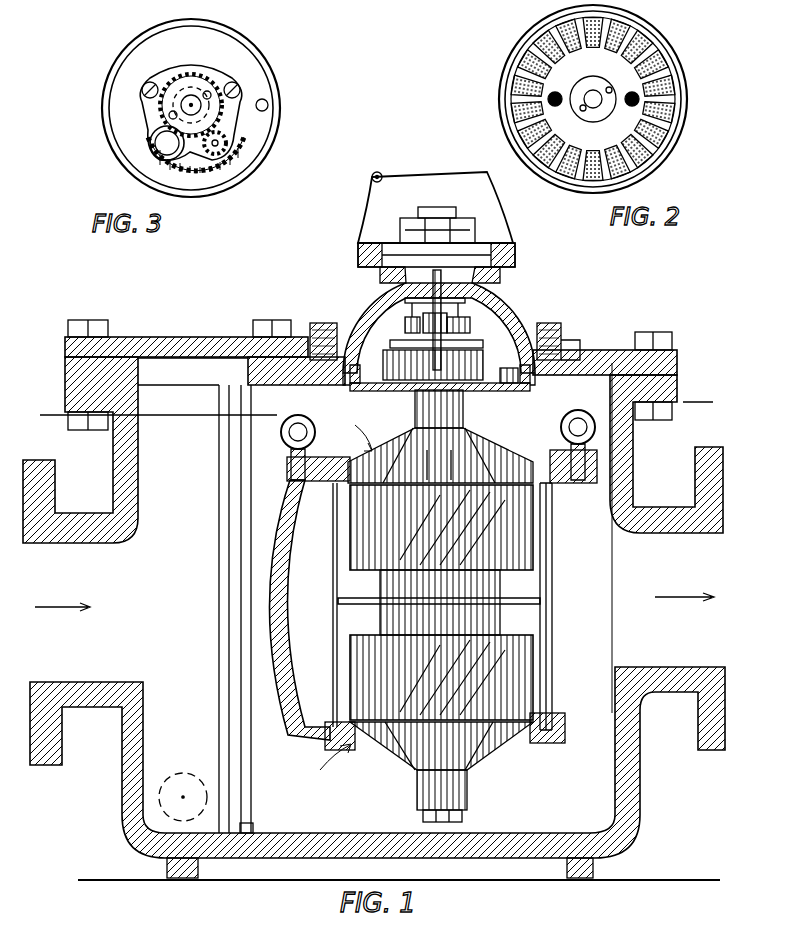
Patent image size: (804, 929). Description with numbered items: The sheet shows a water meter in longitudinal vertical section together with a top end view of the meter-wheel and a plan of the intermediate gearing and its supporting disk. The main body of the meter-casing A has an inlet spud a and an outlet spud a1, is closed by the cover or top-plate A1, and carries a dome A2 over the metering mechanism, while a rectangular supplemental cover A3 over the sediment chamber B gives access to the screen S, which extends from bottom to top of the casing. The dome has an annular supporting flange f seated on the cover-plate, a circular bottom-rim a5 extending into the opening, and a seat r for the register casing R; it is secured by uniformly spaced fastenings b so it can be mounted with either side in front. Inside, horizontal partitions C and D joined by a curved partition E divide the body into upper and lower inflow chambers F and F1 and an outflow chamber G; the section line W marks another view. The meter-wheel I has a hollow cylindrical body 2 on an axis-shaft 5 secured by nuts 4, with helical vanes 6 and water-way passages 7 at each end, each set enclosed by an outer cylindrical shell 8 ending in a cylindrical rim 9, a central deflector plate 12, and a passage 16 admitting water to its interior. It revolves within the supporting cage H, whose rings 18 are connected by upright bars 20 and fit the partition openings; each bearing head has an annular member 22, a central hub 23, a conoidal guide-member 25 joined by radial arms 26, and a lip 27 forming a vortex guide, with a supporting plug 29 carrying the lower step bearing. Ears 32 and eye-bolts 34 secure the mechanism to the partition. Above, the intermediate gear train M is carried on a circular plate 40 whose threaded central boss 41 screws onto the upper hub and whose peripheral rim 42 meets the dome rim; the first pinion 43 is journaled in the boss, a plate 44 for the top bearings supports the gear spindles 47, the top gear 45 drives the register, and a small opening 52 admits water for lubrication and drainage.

In FIG. 1, the main body of the meter-casing A is at (627, 775).
In FIG. 1, the cover or top-plate A1 is at (610, 350).
In FIG. 1, the dome A2 is at (517, 305).
In FIG. 1, the rectangular supplemental cover A3 is at (182, 337).
In FIG. 1, the sediment chamber B is at (183, 753).
In FIG. 1, the upper horizontal partition C is at (598, 472).
In FIG. 1, the lower horizontal partition D is at (590, 723).
In FIG. 1, the curved partition E is at (268, 590).
In FIG. 1, the upper inflow chamber F is at (366, 433).
In FIG. 1, the lower inflow chamber F1 is at (446, 775).
In FIG. 1, the outflow chamber G is at (448, 623).
In FIG. 1, the supporting cage H is at (578, 585).
In FIG. 2, the meter-wheel I is at (589, 58).
In FIG. 1, the meter-wheel I is at (429, 587).
In FIG. 1, the intermediate gear train M is at (449, 320).
In FIG. 1, the register casing R is at (435, 207).
In FIG. 1, the seat r is at (515, 252).
In FIG. 1, the screen S is at (232, 493).
In FIG. 1, the section line W W is at (370, 409).
In FIG. 1, the inlet spud a is at (75, 607).
In FIG. 1, the outlet spud a1 is at (671, 595).
In FIG. 1, the circular bottom-rim a5 is at (451, 372).
In FIG. 1, the fastenings b is at (325, 323).
In FIG. 1, the annular supporting flange f is at (570, 348).
In FIG. 1, the hollow cylindrical body 2 is at (483, 597).
In FIG. 2, the nuts 4 is at (600, 107).
In FIG. 2, the axis-shaft or spindle 5 is at (591, 97).
In FIG. 2, the helical vanes 6 is at (530, 68).
In FIG. 2, the water-way passages 7 is at (505, 103).
In FIG. 1, the outer cylindrical shell 8 is at (348, 523).
In FIG. 2, the cylindrical rim 9 is at (503, 127).
In FIG. 1, the deflector plate or flange 12 is at (455, 602).
In FIG. 2, the passage 16 is at (633, 88).
In FIG. 1, the cage rings 18 is at (330, 485).
In FIG. 1, the upright bars or struts 20 is at (550, 553).
In FIG. 1, the annular member 22 is at (553, 747).
In FIG. 1, the central hub 23 is at (467, 793).
In FIG. 1, the conoidal guide-member 25 is at (402, 787).
In FIG. 1, the radial arms 26 is at (487, 460).
In FIG. 1, the lip 27 is at (332, 712).
In FIG. 1, the supporting plug 29 is at (463, 820).
In FIG. 1, the ears 32 is at (290, 462).
In FIG. 1, the eye-bolts 34 is at (424, 429).
In FIG. 3, the circular plate 40 is at (191, 84).
In FIG. 1, the circular plate 40 is at (440, 400).
In FIG. 1, the threaded central boss 41 is at (462, 381).
In FIG. 3, the peripheral rim or flange 42 is at (252, 44).
In FIG. 1, the peripheral rim or flange 42 is at (349, 381).
In FIG. 3, the first gear or pinion 43 is at (188, 143).
In FIG. 3, the plate for the top-bearings 44 is at (227, 113).
In FIG. 3, the top gear 45 is at (208, 82).
In FIG. 1, the top gear 45 is at (405, 324).
In FIG. 3, the gear spindles 47 is at (182, 152).
In FIG. 3, the small opening 52 is at (262, 102).
In FIG. 1, the small opening 52 is at (508, 383).